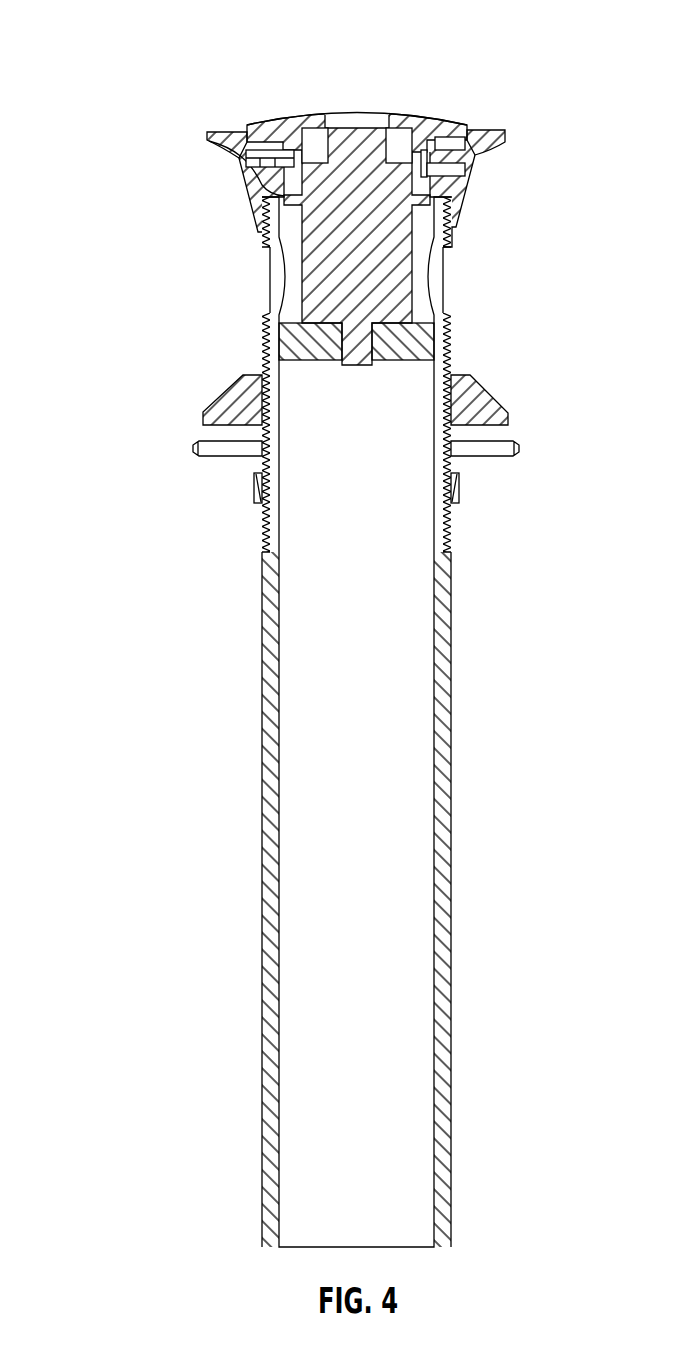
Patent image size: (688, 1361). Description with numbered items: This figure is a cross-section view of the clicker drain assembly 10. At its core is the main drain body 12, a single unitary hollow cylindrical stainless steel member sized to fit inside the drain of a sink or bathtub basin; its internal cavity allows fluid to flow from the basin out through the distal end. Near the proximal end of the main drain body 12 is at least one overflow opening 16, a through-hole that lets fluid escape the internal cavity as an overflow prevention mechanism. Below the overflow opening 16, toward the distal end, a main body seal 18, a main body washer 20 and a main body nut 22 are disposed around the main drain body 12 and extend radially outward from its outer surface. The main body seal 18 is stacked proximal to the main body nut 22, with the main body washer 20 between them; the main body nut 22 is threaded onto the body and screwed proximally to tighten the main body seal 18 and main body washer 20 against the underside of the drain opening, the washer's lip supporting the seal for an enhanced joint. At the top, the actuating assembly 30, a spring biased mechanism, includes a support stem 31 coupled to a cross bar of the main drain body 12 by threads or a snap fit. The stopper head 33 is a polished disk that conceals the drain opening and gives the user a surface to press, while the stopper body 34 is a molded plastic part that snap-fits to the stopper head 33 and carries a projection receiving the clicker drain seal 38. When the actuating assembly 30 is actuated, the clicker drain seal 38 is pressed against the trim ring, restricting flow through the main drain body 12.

The drain assembly 10 is at (106, 31).
The main drain body 12 is at (450, 922).
The overflow opening 16 is at (466, 232).
The main body seal 18 is at (511, 394).
The main body washer 20 is at (527, 453).
The main body nut 22 is at (470, 492).
The actuating assembly 30 is at (397, 273).
The support stem 31 is at (357, 347).
The stopper head 33 is at (385, 100).
The stopper body 34 is at (480, 147).
The clicker drain seal 38 is at (470, 158).